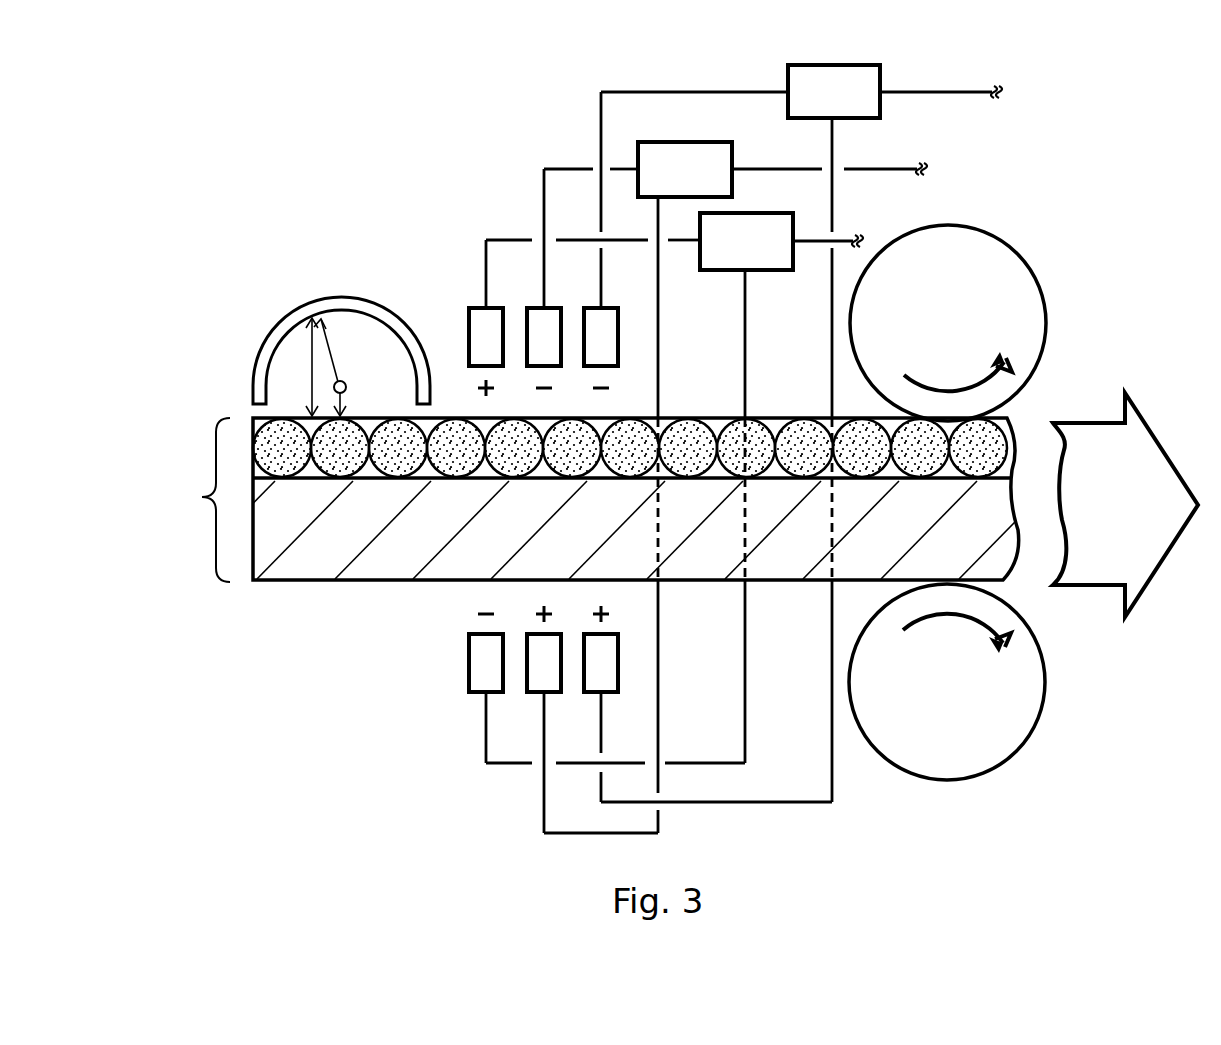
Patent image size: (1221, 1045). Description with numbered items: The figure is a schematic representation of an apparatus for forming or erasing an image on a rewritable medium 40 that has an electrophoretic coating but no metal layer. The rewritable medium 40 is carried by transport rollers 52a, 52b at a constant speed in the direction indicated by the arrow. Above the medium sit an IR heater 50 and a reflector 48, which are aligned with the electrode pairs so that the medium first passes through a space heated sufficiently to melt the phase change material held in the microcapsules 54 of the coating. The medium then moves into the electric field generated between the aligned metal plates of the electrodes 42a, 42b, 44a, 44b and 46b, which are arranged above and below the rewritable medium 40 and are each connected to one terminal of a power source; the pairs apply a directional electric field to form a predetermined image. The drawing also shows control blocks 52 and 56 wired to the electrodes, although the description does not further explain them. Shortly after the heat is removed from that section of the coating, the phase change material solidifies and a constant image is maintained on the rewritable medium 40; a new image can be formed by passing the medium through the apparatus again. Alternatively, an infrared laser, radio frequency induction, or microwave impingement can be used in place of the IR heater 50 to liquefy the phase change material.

The rewritable medium 40 is at (200, 497).
The electrode 42a is at (470, 307).
The electrode 42b is at (470, 693).
The electrode 44a is at (537, 307).
The electrode 44b is at (533, 695).
The electrode 46b is at (618, 330).
The reflector 48 is at (362, 297).
The IR heater 50 is at (346, 382).
The controller 52 is at (732, 254).
The transport roller 52a is at (978, 252).
The transport roller 52b is at (976, 755).
The microcapsules 54 is at (671, 183).
The control unit 56 is at (820, 105).